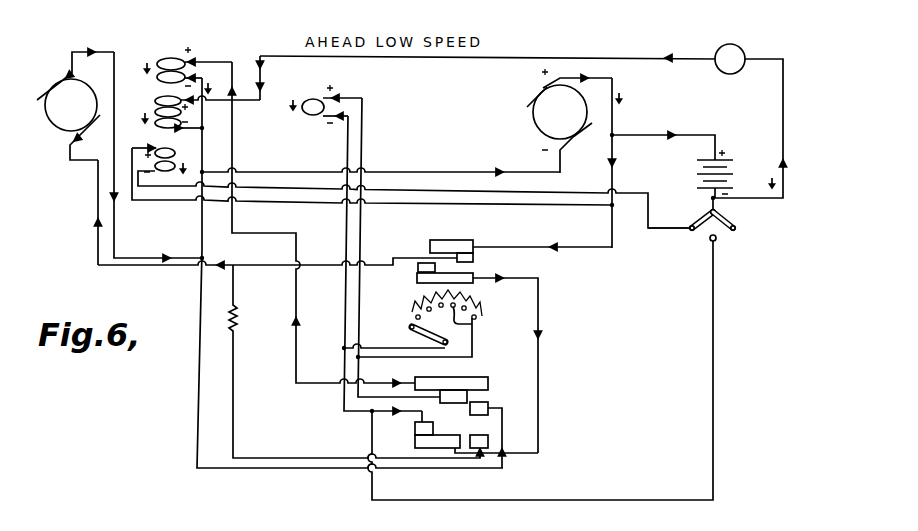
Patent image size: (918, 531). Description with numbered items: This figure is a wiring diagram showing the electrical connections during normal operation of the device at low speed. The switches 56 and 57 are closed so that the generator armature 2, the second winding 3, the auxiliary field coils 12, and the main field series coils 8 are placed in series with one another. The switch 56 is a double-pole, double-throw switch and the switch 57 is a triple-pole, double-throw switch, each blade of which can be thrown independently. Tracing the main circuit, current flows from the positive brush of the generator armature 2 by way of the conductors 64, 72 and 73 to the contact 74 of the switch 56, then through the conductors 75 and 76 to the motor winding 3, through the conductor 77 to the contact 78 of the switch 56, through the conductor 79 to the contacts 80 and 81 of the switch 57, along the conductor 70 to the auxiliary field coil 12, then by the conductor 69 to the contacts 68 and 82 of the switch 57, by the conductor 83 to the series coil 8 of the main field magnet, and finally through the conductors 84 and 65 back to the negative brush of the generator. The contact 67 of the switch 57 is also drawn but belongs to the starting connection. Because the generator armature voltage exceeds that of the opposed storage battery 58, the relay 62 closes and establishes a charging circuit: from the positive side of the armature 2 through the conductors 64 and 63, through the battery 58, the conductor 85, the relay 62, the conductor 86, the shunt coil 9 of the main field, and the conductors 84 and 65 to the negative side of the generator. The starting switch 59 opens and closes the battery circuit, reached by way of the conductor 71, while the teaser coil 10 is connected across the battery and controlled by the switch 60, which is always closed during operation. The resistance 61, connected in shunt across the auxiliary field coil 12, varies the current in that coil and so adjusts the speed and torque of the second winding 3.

The generator armature 2 is at (569, 121).
The second winding 3 is at (75, 105).
The main field series coil 8 is at (169, 56).
The main field shunt coil 9 is at (156, 100).
The teaser coil 10 is at (178, 152).
The auxiliary field coil 12 is at (312, 96).
The switch 56 is at (447, 268).
The switch 57 is at (483, 422).
The storage battery 58 is at (736, 184).
The starting switch 59 is at (736, 222).
The switch 60 is at (708, 212).
The resistance 61 is at (473, 327).
The relay 62 is at (738, 52).
The conductor 63 is at (662, 133).
The conductor 64 is at (613, 128).
The conductor 65 is at (471, 168).
The contact 67 is at (486, 402).
The contact 68 is at (455, 403).
The conductor 69 is at (360, 233).
The conductor 70 is at (347, 232).
The conductor 71 is at (472, 501).
The conductor 72 is at (614, 181).
The conductor 73 is at (529, 246).
The contact 74 is at (462, 256).
The conductor 75 is at (267, 268).
The conductor 76 is at (97, 208).
The conductor 77 is at (106, 50).
The contact 78 is at (422, 268).
The conductor 79 is at (541, 347).
The contact 80 is at (415, 441).
The contact 81 is at (415, 428).
The contact 82 is at (477, 376).
The conductor 83 is at (236, 150).
The conductor 84 is at (202, 140).
The conductor 85 is at (782, 118).
The conductor 86 is at (629, 57).